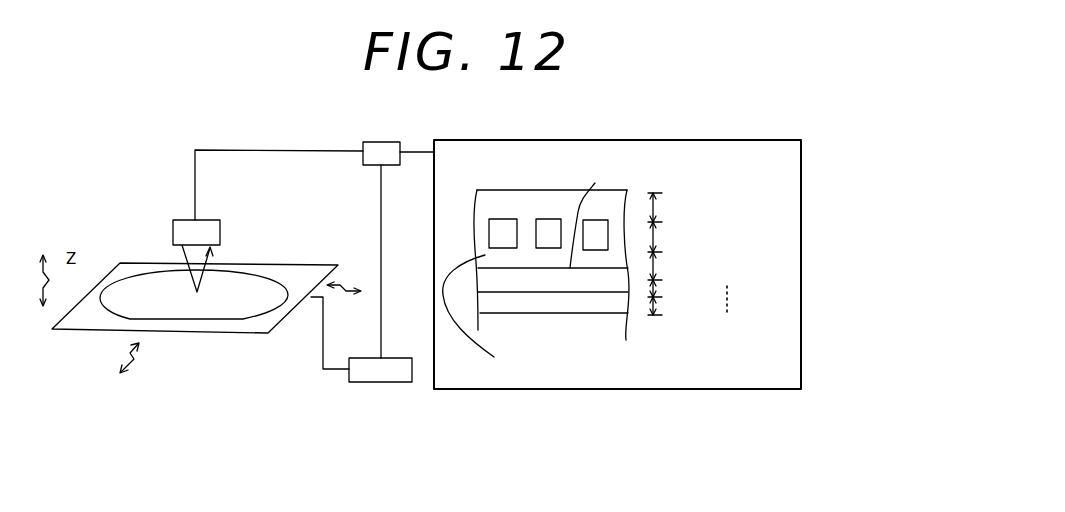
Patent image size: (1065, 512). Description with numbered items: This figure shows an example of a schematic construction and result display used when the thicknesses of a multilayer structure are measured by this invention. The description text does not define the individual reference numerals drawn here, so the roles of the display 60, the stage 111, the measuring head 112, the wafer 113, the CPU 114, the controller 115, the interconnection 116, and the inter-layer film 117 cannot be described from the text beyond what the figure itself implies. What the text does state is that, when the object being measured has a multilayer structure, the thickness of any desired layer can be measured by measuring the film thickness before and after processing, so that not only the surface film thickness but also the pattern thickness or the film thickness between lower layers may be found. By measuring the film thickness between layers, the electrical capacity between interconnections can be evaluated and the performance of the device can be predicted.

The display screen 60 is at (801, 265).
The stage 111 is at (210, 333).
The measuring head 112 is at (173, 232).
The wafer 113 is at (115, 308).
The CPU 114 is at (365, 142).
The controller 115 is at (360, 382).
The interconnection 116 is at (598, 222).
The inter-layer film 117 is at (498, 307).